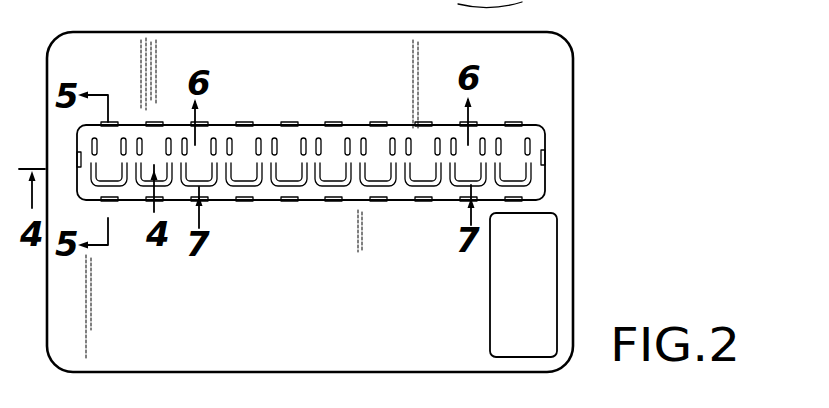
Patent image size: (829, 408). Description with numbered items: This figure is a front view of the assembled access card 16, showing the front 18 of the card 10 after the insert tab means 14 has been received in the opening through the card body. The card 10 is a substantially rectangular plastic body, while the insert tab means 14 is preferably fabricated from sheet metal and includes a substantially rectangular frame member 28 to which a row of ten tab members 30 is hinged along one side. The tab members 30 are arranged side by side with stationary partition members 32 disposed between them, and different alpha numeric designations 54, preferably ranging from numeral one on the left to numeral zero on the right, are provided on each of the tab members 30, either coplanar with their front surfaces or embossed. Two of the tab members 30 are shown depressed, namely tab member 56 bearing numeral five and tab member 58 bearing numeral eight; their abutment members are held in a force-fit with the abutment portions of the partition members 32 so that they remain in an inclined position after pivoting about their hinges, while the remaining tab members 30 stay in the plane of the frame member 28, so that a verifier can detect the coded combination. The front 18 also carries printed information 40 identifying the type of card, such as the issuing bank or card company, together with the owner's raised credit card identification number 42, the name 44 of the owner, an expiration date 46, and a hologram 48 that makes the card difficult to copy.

The card 10 is at (578, 117).
The insert tab means 14 is at (549, 146).
The access card 16 is at (371, 202).
The front 18 is at (541, 66).
The frame member 28 is at (310, 127).
The tab members 30 is at (113, 190).
The partition members 32 is at (80, 150).
The information 40 is at (263, 59).
The credit card identification number 42 is at (495, 288).
The name 44 is at (183, 350).
The expiration date 46 is at (419, 352).
The hologram 48 is at (557, 253).
The alpha numeric designations 54 is at (120, 138).
The tab member 56 is at (295, 180).
The tab member 58 is at (418, 181).